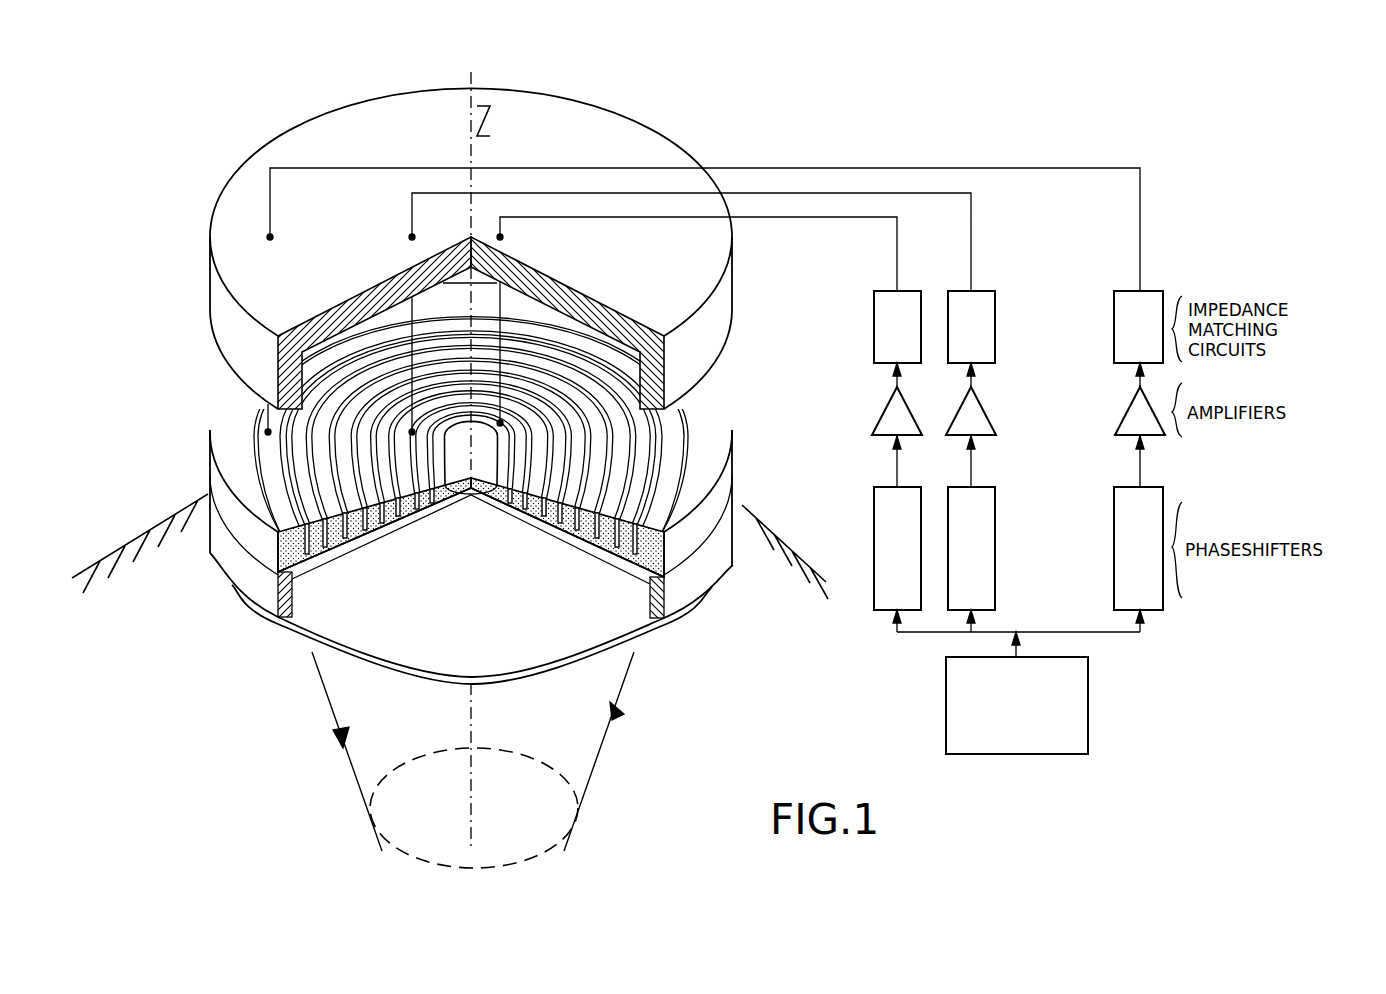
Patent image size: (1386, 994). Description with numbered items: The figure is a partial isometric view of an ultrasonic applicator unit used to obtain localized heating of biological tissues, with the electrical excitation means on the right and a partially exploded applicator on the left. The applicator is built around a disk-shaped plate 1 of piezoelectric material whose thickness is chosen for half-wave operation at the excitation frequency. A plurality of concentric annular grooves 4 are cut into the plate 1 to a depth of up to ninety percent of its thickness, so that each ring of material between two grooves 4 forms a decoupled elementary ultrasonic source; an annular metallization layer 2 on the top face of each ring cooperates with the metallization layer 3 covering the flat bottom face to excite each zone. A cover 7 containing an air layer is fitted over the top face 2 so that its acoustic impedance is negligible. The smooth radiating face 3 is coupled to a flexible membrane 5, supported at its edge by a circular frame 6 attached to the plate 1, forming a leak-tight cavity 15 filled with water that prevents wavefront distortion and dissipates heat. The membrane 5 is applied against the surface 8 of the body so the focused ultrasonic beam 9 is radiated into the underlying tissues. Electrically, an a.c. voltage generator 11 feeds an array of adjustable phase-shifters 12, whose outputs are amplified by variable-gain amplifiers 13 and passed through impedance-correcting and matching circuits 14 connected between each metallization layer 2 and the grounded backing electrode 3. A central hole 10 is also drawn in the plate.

The plate of piezoelectric material 1 is at (696, 540).
The annular metallization layer 2 is at (668, 470).
The metallization layer 3 is at (572, 538).
The annular grooves 4 is at (690, 426).
The membrane 5 is at (636, 626).
The circular frame 6 is at (690, 598).
The cover 7 is at (722, 331).
The surface of a body 8 is at (150, 540).
The focused ultrasonic beam 9 is at (330, 712).
The central hole 10 is at (470, 492).
The a.c. voltage generator 11 is at (1088, 713).
The adjustable phase-shifters 12 is at (874, 510).
The variable-gain amplifiers 13 is at (885, 410).
The impedance-correcting and matching circuits 14 is at (874, 338).
The leak-tight cavity 15 is at (336, 560).